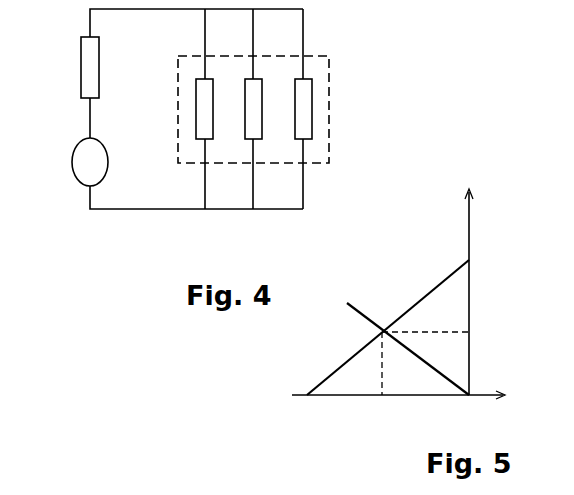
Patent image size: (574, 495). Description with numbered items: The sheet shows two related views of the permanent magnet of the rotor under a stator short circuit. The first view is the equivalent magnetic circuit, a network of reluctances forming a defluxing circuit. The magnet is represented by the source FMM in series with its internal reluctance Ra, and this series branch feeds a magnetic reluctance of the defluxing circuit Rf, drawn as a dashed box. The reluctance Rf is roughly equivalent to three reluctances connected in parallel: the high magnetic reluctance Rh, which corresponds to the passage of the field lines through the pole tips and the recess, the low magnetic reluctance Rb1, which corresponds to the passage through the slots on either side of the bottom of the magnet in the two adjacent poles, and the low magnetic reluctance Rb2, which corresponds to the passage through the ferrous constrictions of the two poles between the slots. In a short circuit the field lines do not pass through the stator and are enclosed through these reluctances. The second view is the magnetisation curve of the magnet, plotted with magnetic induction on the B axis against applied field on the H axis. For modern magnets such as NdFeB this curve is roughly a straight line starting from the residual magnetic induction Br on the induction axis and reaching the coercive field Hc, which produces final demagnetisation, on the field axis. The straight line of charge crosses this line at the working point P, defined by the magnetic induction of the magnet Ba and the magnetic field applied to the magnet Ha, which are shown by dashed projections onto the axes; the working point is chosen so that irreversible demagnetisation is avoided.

In FIG. 4, the internal reluctance Ra is at (88, 69).
In FIG. 4, the source FMM is at (80, 170).
In FIG. 4, the magnetic reluctance of the defluxing circuit Rf is at (329, 75).
In FIG. 4, the high magnetic reluctance Rh is at (209, 136).
In FIG. 4, the low magnetic reluctance Rb1 is at (257, 128).
In FIG. 4, the low magnetic reluctance Rb2 is at (307, 118).
In FIG. 5, the magnetic induction axis B is at (469, 280).
In FIG. 5, the magnetic field axis H is at (407, 397).
In FIG. 5, the residual magnetic induction Br is at (469, 260).
In FIG. 5, the working point P is at (381, 320).
In FIG. 5, the magnetic induction of the magnet Ba is at (469, 325).
In FIG. 5, the magnetic field applied to the magnet Ha is at (379, 399).
In FIG. 5, the coercive field Hc is at (300, 399).